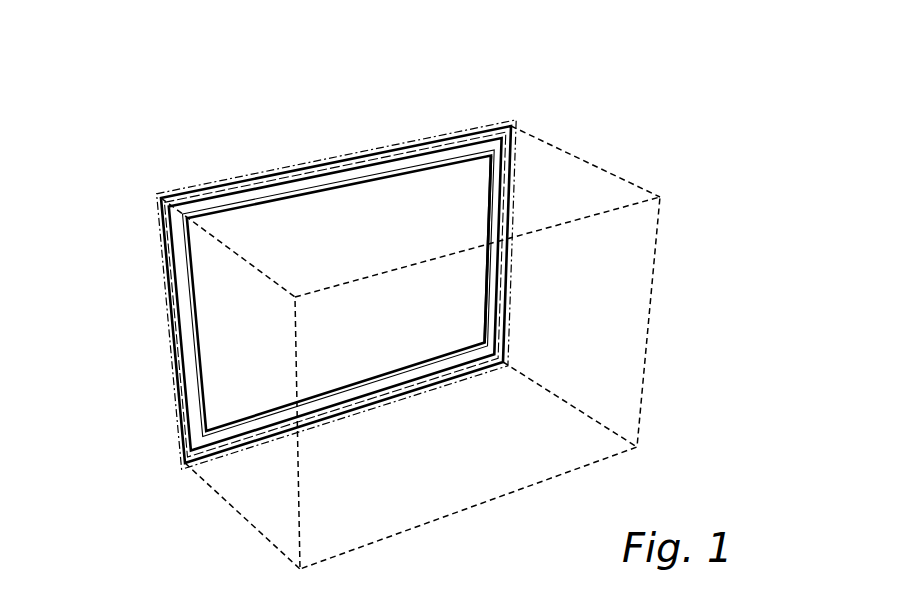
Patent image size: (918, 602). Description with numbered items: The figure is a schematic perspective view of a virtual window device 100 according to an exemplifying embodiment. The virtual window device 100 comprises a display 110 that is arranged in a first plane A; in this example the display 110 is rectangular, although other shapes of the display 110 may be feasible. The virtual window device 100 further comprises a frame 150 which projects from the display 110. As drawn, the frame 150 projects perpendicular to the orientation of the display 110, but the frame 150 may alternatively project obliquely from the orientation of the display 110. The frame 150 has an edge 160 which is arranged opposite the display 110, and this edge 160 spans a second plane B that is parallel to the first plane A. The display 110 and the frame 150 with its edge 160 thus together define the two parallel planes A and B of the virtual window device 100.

The virtual window device 100 is at (546, 63).
The display 110 is at (351, 210).
The frame 150 is at (158, 200).
The first plane A is at (157, 237).
The second plane B is at (167, 287).
The edge 160 is at (497, 300).